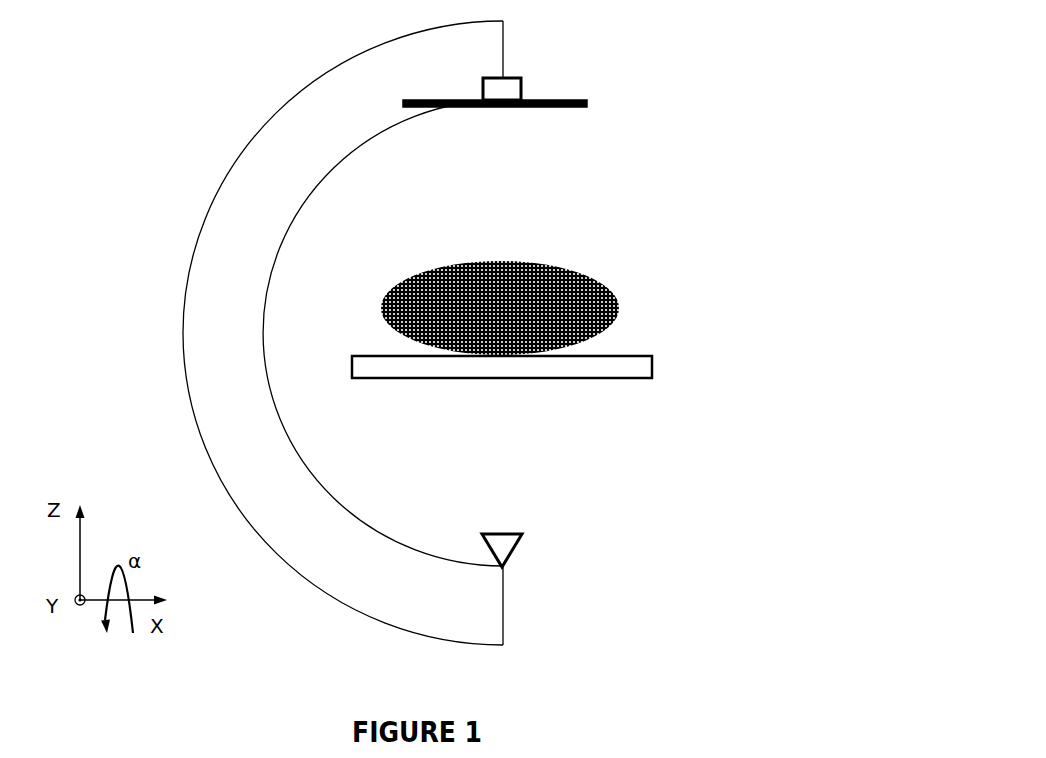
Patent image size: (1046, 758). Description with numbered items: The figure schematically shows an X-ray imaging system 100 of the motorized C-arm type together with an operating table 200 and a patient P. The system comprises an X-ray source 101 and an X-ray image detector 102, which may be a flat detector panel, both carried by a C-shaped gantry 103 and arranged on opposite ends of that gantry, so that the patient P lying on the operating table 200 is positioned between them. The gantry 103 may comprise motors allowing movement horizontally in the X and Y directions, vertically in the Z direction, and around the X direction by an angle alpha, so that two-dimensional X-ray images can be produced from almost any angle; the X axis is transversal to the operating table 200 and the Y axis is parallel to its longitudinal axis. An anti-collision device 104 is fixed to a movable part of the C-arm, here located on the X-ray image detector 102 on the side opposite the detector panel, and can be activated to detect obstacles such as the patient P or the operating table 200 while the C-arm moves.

The X-ray imaging system 100 is at (387, 333).
The X-ray source 101 is at (545, 547).
The X-ray image detector 102 is at (615, 103).
The C-shaped gantry 103 is at (191, 262).
The anti-collision device 104 is at (541, 88).
The patient P is at (631, 283).
The operating table 200 is at (675, 372).